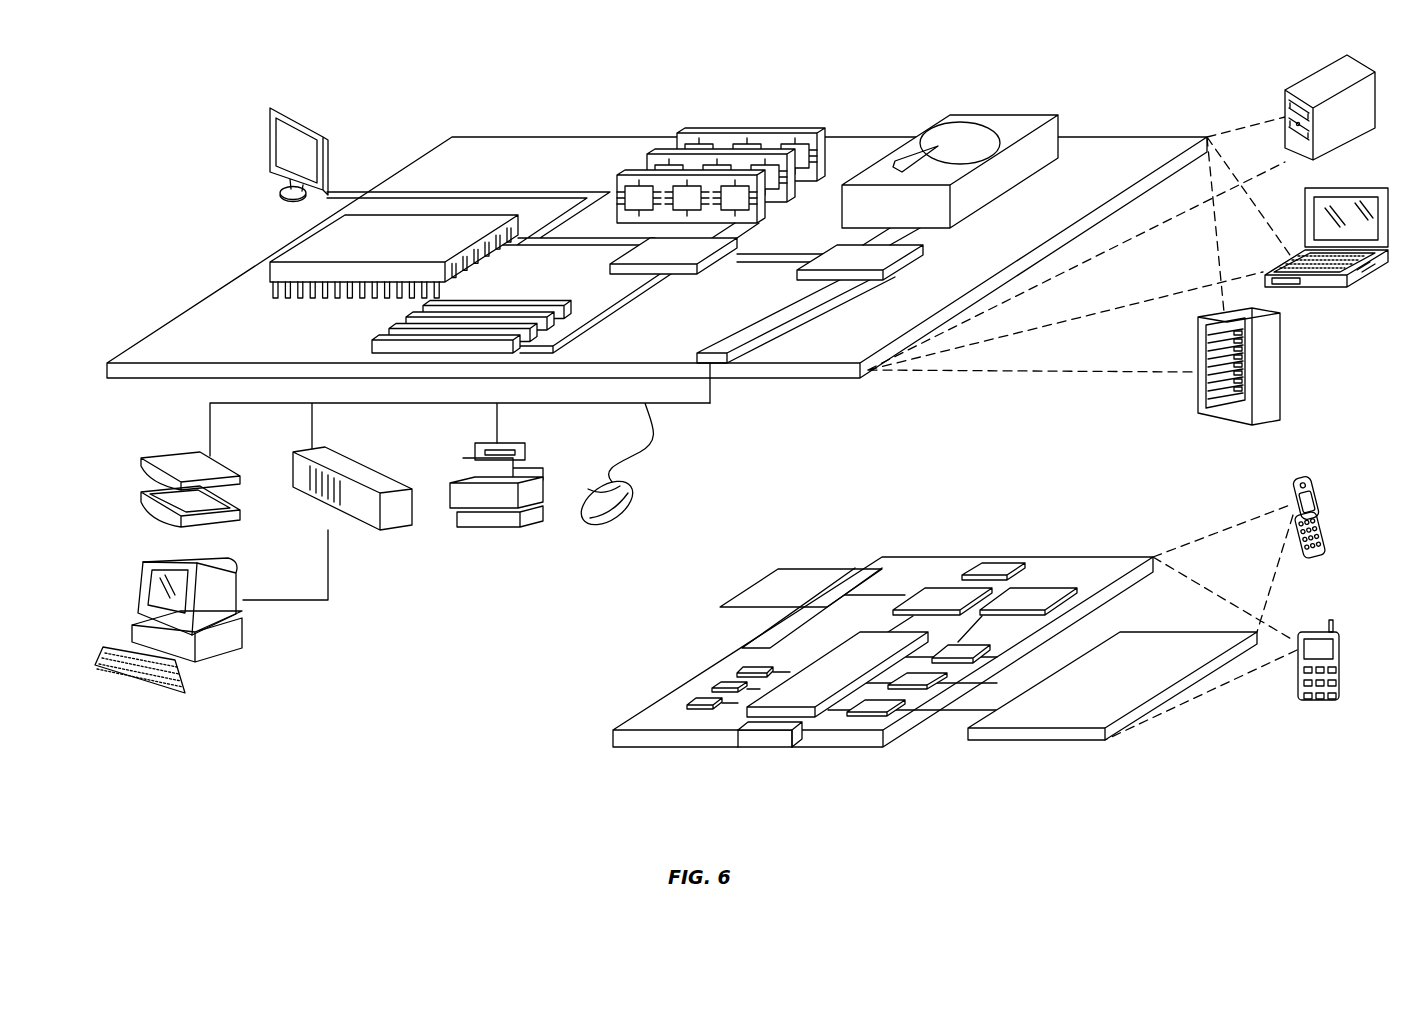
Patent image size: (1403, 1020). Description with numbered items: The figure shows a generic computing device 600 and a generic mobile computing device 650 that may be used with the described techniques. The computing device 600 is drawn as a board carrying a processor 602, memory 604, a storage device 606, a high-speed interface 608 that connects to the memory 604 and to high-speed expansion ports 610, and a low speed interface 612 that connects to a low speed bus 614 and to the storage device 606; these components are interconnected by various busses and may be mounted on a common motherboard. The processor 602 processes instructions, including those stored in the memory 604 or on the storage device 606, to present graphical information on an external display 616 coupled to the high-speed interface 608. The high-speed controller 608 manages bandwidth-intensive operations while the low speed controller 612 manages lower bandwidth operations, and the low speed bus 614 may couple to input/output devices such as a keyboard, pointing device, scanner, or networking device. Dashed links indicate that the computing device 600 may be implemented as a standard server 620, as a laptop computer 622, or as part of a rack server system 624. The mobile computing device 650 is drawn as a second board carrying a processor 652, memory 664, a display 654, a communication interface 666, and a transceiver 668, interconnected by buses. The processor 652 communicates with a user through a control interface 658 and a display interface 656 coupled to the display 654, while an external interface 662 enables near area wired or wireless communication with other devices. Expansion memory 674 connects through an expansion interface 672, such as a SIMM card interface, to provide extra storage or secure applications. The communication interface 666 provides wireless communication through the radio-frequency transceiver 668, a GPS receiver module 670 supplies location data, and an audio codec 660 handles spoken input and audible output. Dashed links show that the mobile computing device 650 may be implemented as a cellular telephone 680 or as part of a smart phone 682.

The computing device 600 is at (401, 80).
The processor 602 is at (291, 240).
The memory 604 is at (755, 132).
The storage device 606 is at (994, 113).
The high-speed interface 608 is at (687, 250).
The high-speed expansion ports 610 is at (394, 326).
The low speed interface 612 is at (833, 257).
The low speed bus 614 is at (720, 347).
The display 616 is at (271, 107).
The standard server 620 is at (1306, 83).
The laptop computer 622 is at (1363, 187).
The rack server system 624 is at (1284, 367).
The mobile computing device 650 is at (566, 762).
The processor 652 is at (805, 682).
The display 654 is at (1152, 647).
The display interface 656 is at (883, 703).
The control interface 658 is at (927, 677).
The audio codec 660 is at (963, 647).
The external interface 662 is at (765, 733).
The memory 664 is at (720, 686).
The communication interface 666 is at (940, 588).
The transceiver 668 is at (1033, 590).
The GPS receiver module 670 is at (996, 565).
The expansion interface 672 is at (865, 568).
The expansion memory 674 is at (780, 568).
The cellular telephone 680 is at (1302, 477).
The smart phone 682 is at (1312, 632).